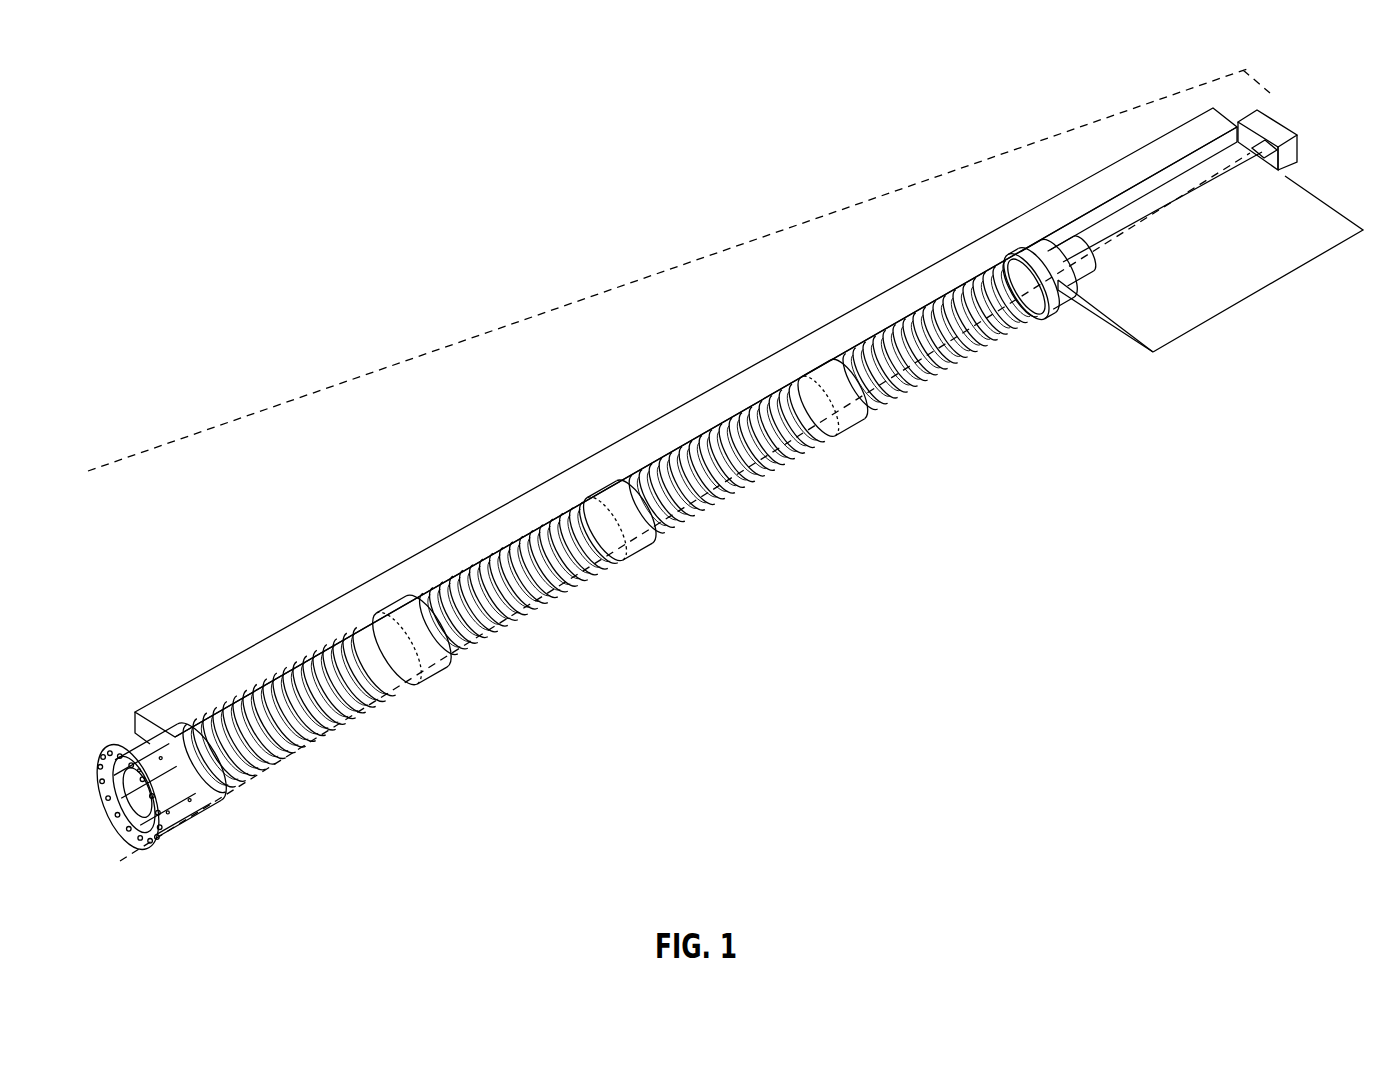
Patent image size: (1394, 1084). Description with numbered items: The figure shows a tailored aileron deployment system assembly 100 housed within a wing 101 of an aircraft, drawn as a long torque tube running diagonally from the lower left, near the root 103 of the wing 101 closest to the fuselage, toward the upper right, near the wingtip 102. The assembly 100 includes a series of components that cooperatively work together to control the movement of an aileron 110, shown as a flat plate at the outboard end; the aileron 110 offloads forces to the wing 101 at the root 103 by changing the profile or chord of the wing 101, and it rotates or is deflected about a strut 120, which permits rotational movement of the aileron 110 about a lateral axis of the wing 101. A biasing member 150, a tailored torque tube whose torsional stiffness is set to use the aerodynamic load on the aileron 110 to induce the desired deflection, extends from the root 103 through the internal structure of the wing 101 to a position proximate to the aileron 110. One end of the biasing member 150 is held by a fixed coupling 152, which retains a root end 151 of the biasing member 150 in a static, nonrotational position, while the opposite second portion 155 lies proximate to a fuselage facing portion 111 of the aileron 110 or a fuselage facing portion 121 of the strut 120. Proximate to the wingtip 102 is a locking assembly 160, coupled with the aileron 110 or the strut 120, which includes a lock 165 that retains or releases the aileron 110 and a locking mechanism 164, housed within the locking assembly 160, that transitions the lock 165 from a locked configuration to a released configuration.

The tailored aileron deployment system assembly 100 is at (565, 574).
The wing 101 is at (226, 500).
The wingtip 102 is at (1280, 116).
The root 103 is at (698, 404).
The aileron 110 is at (1217, 295).
The fuselage facing portion 111 is at (1102, 327).
The strut 120 is at (686, 404).
The fuselage facing portion 121 is at (1045, 248).
The biasing member 150 is at (737, 542).
The root end 151 is at (197, 840).
The fixed coupling 152 is at (128, 745).
The second portion 155 is at (1022, 340).
The locking assembly 160 is at (1262, 112).
The locking mechanism 164 is at (1282, 133).
The lock 165 is at (1297, 162).